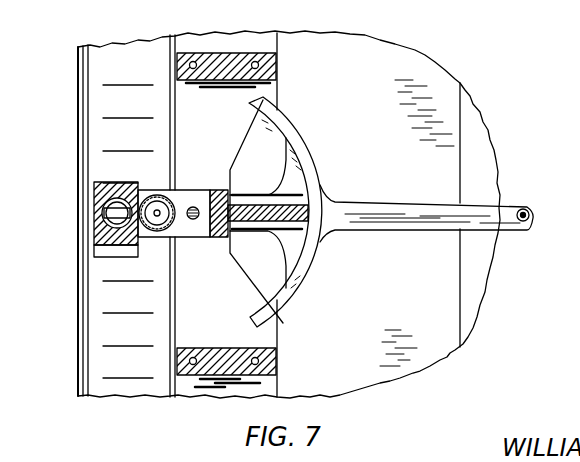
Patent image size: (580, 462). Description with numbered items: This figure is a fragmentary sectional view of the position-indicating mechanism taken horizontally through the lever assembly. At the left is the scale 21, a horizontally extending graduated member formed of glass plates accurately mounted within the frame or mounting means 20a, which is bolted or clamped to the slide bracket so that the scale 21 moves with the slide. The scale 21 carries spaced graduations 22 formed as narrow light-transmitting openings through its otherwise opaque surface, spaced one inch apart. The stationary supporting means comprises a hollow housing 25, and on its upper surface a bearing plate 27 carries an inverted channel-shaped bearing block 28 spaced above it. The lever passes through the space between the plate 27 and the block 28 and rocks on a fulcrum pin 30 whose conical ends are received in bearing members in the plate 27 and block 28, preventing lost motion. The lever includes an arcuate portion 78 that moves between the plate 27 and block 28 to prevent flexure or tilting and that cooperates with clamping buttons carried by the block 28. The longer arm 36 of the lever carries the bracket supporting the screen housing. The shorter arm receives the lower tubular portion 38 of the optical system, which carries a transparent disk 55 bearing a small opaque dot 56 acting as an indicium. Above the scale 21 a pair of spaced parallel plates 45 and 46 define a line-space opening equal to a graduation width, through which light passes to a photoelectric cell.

The scale 21 is at (121, 203).
The graduations 22 is at (147, 113).
The bearing block 28 is at (277, 71).
The bearing plate 27 is at (312, 208).
The arcuate portion 78 is at (292, 288).
The frame or mounting means 20a is at (87, 173).
The lower tubular portion 38 is at (161, 185).
The transparent disk 55 is at (170, 191).
The plate 46 is at (101, 211).
The plate 45 is at (106, 223).
The fulcrum pin 30 is at (212, 238).
The dot 56 is at (193, 220).
The arm 36 is at (425, 190).
The housing 25 is at (450, 353).